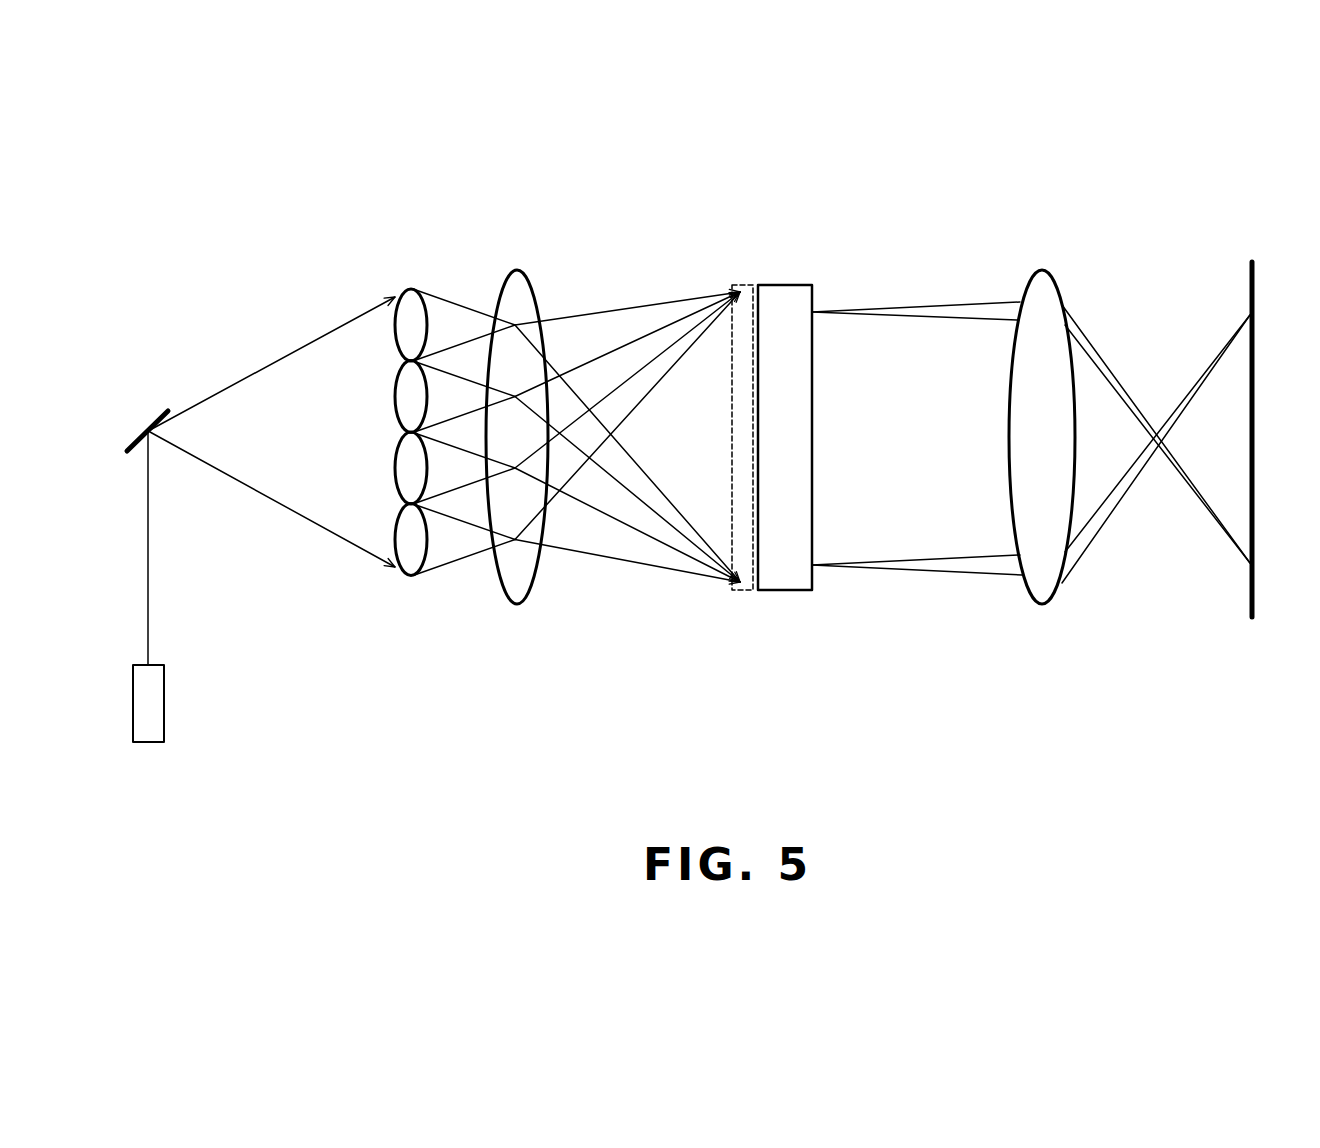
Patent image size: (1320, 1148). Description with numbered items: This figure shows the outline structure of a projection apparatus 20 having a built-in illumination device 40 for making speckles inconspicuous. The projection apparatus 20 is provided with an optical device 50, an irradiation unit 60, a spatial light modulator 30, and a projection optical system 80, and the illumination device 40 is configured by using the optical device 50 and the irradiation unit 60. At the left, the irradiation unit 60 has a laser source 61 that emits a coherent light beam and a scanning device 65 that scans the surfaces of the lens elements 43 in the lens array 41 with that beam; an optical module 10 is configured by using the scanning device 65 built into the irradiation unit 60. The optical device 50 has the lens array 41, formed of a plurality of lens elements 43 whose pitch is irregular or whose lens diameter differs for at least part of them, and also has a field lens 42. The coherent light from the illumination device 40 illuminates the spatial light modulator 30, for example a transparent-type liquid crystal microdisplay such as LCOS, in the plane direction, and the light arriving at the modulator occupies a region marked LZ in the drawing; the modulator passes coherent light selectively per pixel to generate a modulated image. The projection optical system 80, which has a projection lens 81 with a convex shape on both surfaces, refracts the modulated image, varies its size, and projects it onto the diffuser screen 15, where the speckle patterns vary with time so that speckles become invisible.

The optical module 10 is at (322, 200).
The diffuser screen 15 is at (1252, 620).
The projection apparatus 20 is at (288, 792).
The spatial light modulator 30 is at (792, 595).
The illumination device 40 is at (503, 727).
The lens array 41 is at (407, 582).
The field lens 42 is at (522, 592).
The lens element 43 is at (405, 472).
The optical device 50 is at (560, 680).
The irradiation unit 60 is at (220, 540).
The laser source 61 is at (165, 702).
The scanning device 65 is at (155, 417).
The projection optical system 80 is at (1142, 597).
The projection lens 81 is at (1048, 607).
The illumination region LZ is at (736, 595).